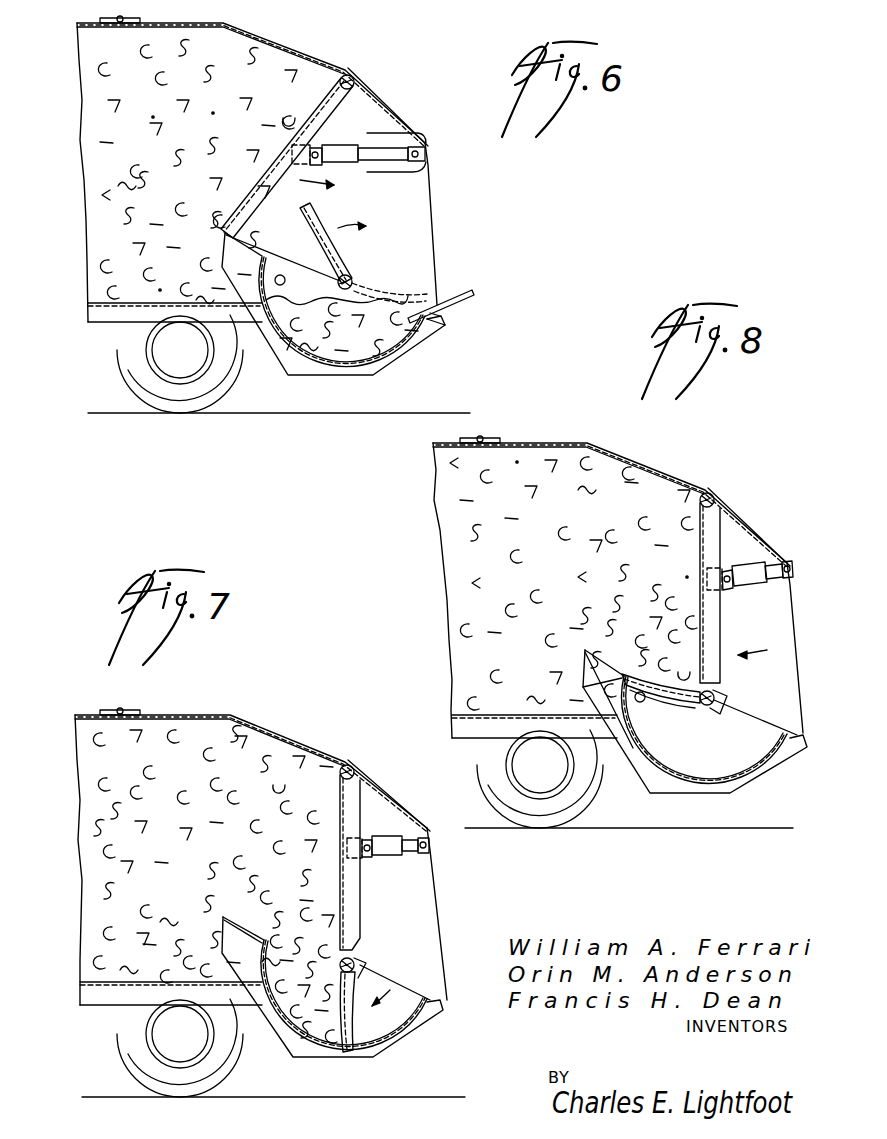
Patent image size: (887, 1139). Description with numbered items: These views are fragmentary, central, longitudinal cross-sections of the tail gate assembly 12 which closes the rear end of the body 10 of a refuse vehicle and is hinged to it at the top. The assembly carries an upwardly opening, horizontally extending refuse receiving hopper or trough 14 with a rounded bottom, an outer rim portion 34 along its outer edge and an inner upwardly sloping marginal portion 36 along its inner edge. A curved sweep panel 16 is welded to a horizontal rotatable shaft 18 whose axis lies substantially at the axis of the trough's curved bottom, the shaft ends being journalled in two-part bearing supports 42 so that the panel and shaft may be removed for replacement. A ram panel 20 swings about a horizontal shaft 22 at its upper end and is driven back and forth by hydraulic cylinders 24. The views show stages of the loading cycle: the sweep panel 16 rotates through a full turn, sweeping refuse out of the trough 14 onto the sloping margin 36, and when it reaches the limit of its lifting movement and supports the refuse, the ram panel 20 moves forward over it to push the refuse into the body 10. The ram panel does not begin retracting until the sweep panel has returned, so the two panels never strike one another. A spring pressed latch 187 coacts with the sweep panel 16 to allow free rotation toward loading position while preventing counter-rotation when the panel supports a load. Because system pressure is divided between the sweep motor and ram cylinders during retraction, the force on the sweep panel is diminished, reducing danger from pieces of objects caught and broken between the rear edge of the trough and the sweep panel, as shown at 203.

In FIG. 6, the body 10 is at (77, 128).
In FIG. 7, the body 10 is at (78, 884).
In FIG. 8, the body 10 is at (440, 529).
In FIG. 6, the tail gate assembly 12 is at (434, 203).
In FIG. 7, the tail gate assembly 12 is at (440, 870).
In FIG. 8, the tail gate assembly 12 is at (792, 576).
In FIG. 6, the refuse receiving hopper or trough 14 is at (296, 355).
In FIG. 7, the refuse receiving hopper or trough 14 is at (290, 1044).
In FIG. 8, the refuse receiving hopper or trough 14 is at (668, 778).
In FIG. 6, the sweep panel 16 is at (314, 212).
In FIG. 7, the sweep panel 16 is at (352, 1042).
In FIG. 8, the sweep panel 16 is at (685, 706).
In FIG. 6, the shaft 18 is at (349, 275).
In FIG. 7, the shaft 18 is at (356, 960).
In FIG. 8, the shaft 18 is at (718, 695).
In FIG. 6, the ram panel 20 is at (318, 100).
In FIG. 7, the ram panel 20 is at (360, 800).
In FIG. 8, the ram panel 20 is at (718, 516).
In FIG. 6, the shaft 22 is at (352, 76).
In FIG. 7, the shaft 22 is at (352, 766).
In FIG. 8, the shaft 22 is at (712, 494).
In FIG. 6, the hydraulic cylinders 24 is at (338, 150).
In FIG. 7, the hydraulic cylinders 24 is at (392, 836).
In FIG. 8, the hydraulic cylinders 24 is at (752, 565).
In FIG. 6, the outer rim portion 34 is at (468, 312).
In FIG. 7, the outer rim portion 34 is at (430, 998).
In FIG. 8, the outer rim portion 34 is at (795, 732).
In FIG. 6, the inner upwardly sloping marginal portion 36 is at (264, 246).
In FIG. 7, the inner upwardly sloping marginal portion 36 is at (256, 908).
In FIG. 8, the inner upwardly sloping marginal portion 36 is at (602, 682).
In FIG. 8, the bearing supports 42 is at (718, 710).
In FIG. 6, the spring pressed latch 187 is at (283, 274).
In FIG. 8, the spring pressed latch 187 is at (641, 703).
In FIG. 6, the caught and broken object 203 is at (464, 292).